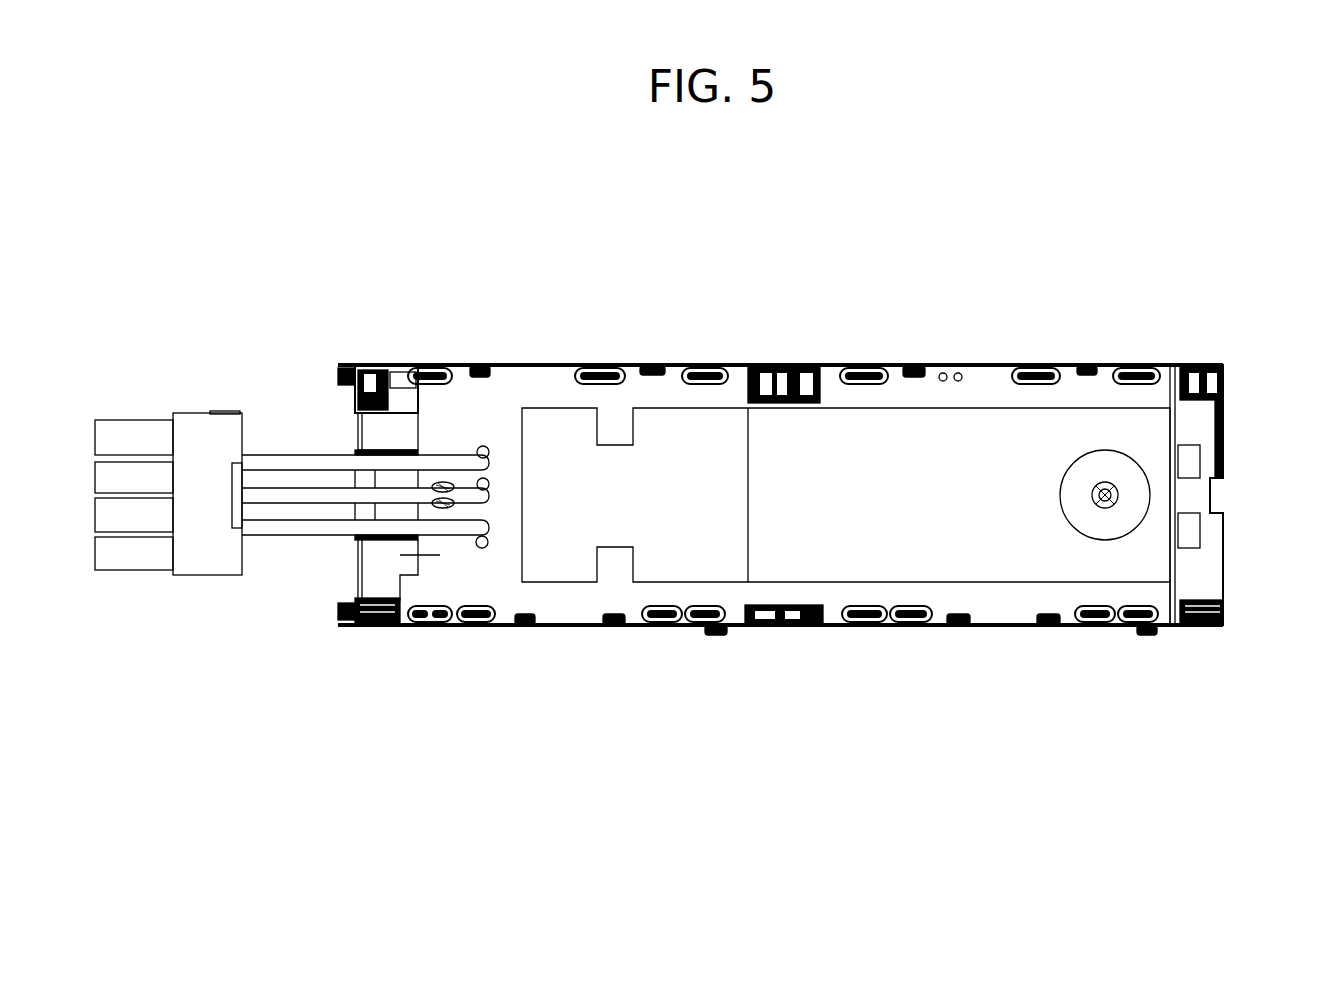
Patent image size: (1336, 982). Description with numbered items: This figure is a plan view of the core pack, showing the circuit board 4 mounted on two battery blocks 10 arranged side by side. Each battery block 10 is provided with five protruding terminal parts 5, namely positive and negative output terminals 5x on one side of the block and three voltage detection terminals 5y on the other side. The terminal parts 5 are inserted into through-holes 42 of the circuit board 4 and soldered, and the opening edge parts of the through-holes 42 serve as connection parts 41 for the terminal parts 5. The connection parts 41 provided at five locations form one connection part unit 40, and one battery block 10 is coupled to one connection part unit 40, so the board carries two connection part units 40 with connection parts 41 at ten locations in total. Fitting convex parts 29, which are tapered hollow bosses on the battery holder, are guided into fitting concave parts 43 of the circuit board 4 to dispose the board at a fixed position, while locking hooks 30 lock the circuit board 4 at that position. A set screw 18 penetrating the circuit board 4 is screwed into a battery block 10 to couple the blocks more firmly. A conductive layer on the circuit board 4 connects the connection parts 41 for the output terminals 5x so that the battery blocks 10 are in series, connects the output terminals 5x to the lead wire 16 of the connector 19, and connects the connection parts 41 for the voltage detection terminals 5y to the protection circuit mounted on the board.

The circuit board 4 is at (440, 555).
The terminal part 5 is at (1277, 275).
The output terminal 5x is at (1152, 600).
The voltage detection terminal 5y is at (430, 364).
The battery block 10 is at (361, 670).
The lead wire 16 is at (298, 460).
The set screw 18 is at (1116, 490).
The connector 19 is at (146, 392).
The fitting convex part 29 is at (770, 364).
The locking hook 30 is at (487, 364).
The connection part unit 40 is at (745, 245).
The connection part 41 is at (447, 364).
The through-hole 42 is at (432, 364).
The fitting concave part 43 is at (775, 406).